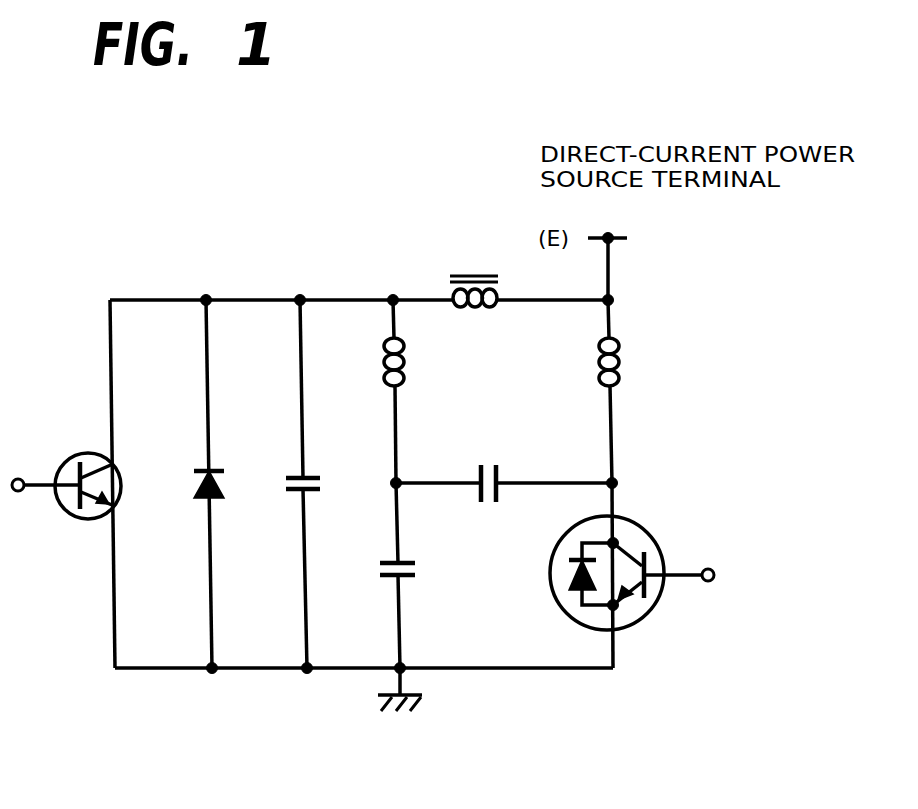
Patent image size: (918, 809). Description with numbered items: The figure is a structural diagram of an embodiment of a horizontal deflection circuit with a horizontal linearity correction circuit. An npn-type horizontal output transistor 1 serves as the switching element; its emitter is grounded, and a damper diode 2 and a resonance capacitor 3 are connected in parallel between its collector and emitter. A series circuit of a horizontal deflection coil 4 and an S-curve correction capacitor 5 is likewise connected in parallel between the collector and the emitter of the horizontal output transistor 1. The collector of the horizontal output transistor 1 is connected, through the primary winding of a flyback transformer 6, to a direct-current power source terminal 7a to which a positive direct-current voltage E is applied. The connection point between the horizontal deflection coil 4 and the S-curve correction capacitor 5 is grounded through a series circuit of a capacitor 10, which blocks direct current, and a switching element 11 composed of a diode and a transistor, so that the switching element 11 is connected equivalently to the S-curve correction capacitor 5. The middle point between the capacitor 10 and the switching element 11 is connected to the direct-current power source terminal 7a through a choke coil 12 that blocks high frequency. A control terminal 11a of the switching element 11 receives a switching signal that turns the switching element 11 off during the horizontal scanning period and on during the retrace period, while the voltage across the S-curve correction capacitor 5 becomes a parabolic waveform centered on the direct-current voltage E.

The horizontal output transistor 1 is at (68, 518).
The damper diode 2 is at (215, 502).
The resonance capacitor 3 is at (310, 495).
The horizontal deflection coil 4 is at (407, 372).
The S-curve correction capacitor 5 is at (403, 583).
The flyback transformer 6 is at (475, 270).
The direct-current power source terminal 7a is at (612, 244).
The capacitor 10 is at (488, 506).
The switching element 11 is at (645, 530).
The control terminal 11a is at (708, 562).
The choke coil 12 is at (622, 372).